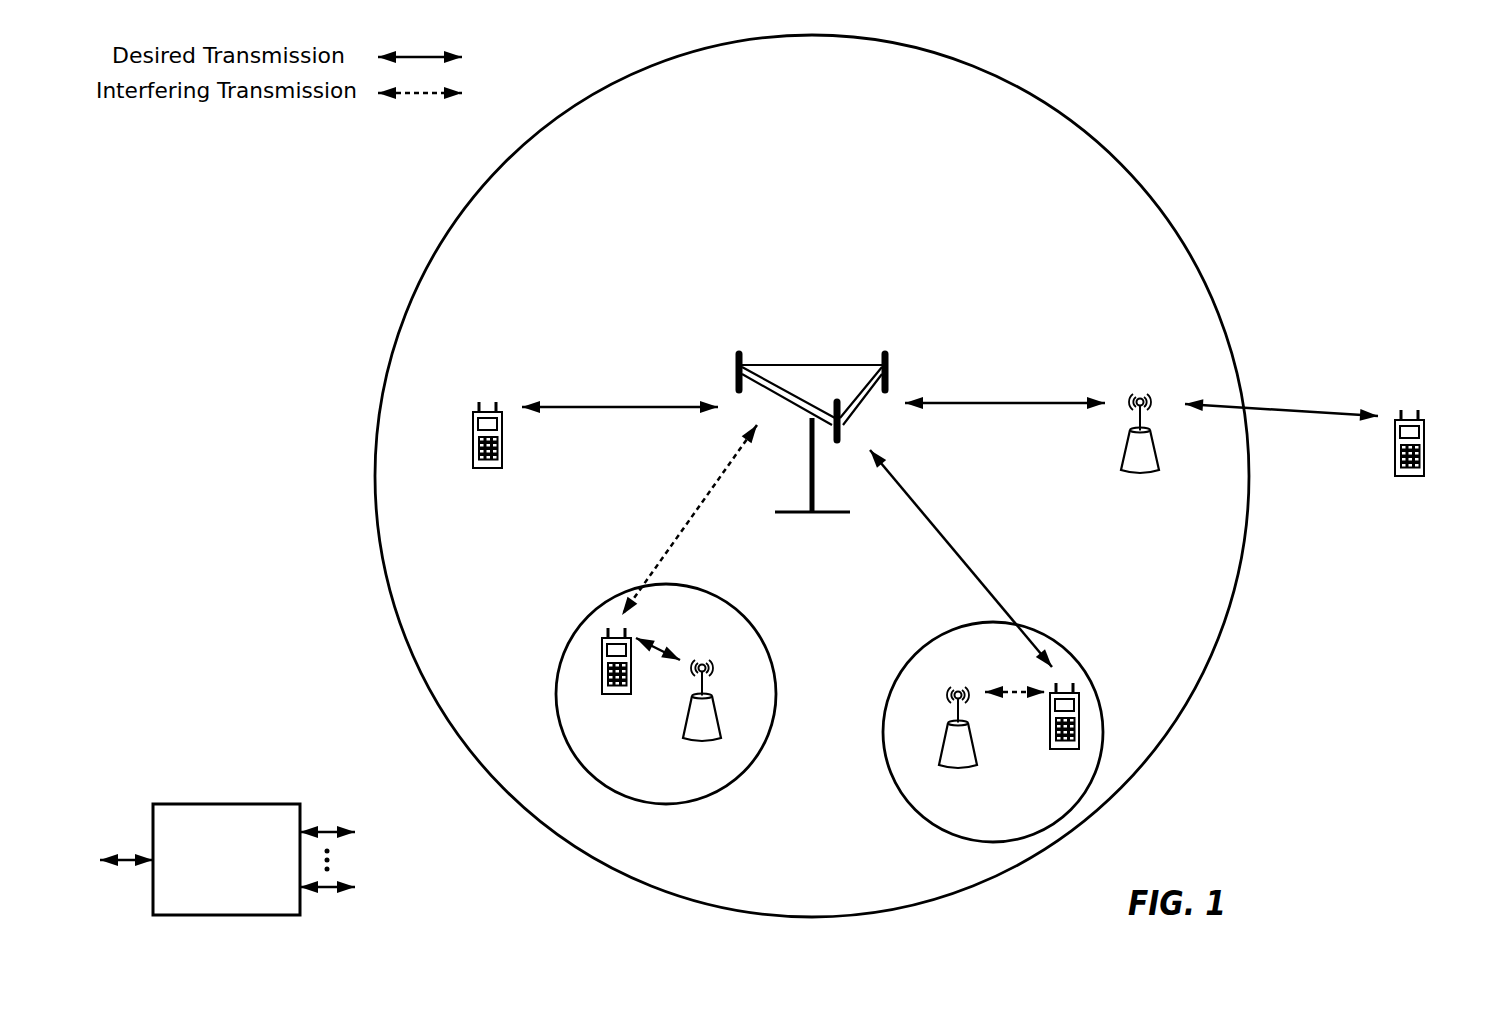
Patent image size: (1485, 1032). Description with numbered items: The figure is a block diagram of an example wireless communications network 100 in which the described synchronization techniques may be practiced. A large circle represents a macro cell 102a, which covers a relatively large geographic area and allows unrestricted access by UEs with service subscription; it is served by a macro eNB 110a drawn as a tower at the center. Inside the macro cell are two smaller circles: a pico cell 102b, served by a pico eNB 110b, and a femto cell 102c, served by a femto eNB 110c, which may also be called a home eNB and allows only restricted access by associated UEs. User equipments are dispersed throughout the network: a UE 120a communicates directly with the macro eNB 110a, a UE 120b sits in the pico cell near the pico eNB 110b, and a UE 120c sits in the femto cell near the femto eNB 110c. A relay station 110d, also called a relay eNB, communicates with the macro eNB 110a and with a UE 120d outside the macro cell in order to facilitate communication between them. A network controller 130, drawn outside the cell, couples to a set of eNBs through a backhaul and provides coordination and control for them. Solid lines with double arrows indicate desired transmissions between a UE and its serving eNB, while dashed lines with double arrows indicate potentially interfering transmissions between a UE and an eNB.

The wireless communications network 100 is at (1327, 106).
The macro cell 102a is at (1103, 143).
The pico cell 102b is at (748, 616).
The femto cell 102c is at (907, 655).
The macro eNB 110a is at (812, 363).
The pico eNB 110b is at (736, 714).
The femto eNB 110c is at (942, 752).
The relay station 110d is at (1142, 398).
The UE 120a is at (474, 421).
The UE 120b is at (602, 689).
The UE 120c is at (1050, 745).
The UE 120d is at (1426, 430).
The network controller 130 is at (233, 791).